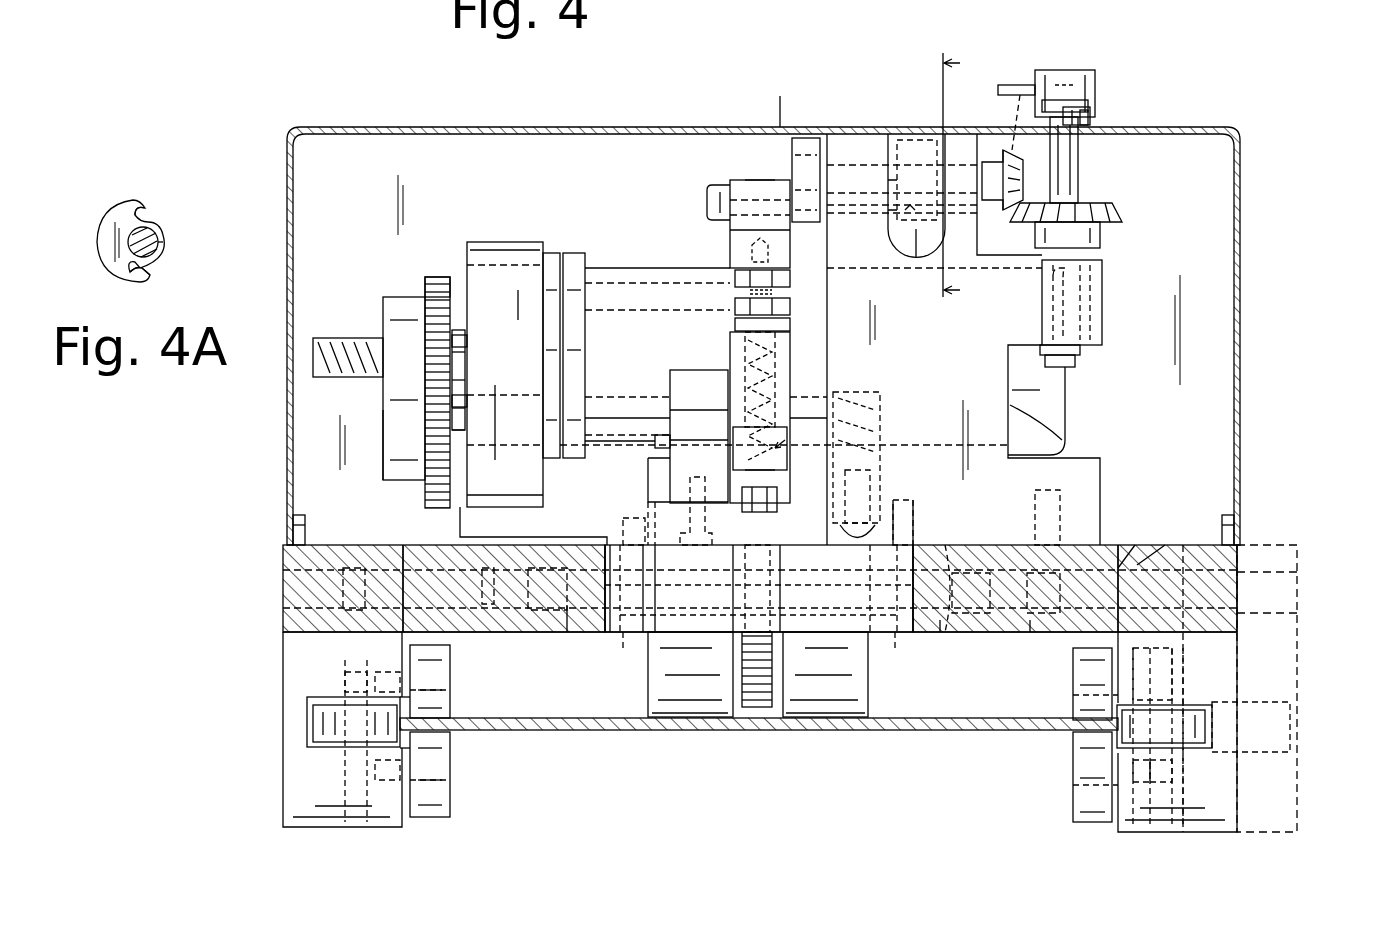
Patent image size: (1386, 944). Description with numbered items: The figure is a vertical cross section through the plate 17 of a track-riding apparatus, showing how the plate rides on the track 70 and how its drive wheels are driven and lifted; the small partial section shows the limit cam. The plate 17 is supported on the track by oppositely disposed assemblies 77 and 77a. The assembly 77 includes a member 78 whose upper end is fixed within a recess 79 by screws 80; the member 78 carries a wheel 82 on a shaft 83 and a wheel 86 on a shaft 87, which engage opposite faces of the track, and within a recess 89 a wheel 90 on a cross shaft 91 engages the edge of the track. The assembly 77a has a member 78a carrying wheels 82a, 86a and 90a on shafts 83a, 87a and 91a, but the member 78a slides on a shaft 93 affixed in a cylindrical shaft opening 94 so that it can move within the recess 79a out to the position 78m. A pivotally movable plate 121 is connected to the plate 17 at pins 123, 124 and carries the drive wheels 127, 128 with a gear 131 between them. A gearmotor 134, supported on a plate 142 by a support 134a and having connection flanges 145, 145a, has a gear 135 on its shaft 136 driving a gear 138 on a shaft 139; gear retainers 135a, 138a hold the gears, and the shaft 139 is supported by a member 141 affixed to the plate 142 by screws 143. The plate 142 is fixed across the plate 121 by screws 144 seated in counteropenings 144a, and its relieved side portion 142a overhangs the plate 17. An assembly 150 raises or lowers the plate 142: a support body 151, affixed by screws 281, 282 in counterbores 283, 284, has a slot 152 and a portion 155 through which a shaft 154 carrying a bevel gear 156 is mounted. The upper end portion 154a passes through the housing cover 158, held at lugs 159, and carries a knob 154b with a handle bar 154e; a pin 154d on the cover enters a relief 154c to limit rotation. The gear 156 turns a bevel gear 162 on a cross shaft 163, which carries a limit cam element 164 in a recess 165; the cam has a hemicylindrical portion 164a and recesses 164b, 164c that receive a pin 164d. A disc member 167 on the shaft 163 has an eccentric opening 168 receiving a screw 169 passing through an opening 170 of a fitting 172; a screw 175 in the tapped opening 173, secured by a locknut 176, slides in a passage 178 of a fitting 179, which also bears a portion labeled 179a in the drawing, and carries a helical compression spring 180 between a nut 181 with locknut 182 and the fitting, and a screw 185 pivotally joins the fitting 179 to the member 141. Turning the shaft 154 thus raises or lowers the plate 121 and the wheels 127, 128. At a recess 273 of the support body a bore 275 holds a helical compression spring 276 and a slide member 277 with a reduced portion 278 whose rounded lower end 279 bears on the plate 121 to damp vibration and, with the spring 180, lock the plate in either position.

In FIG. 4, the plate 17 is at (283, 549).
In FIG. 4, the curved track 70 is at (532, 718).
In FIG. 4, the assembly 77 is at (262, 726).
In FIG. 4, the assembly 77a is at (1323, 699).
In FIG. 4, the member 78 is at (283, 655).
In FIG. 4, the member 78a is at (1237, 668).
In FIG. 4, the outward position of member 78a 78m is at (1297, 608).
In FIG. 4, the recess 79 is at (400, 548).
In FIG. 4, the recess 79a is at (1125, 548).
In FIG. 4, the screw 80 is at (283, 620).
In FIG. 4, the wheel 82 is at (450, 660).
In FIG. 4, the wheel 82a is at (1073, 672).
In FIG. 4, the shaft 83 is at (452, 694).
In FIG. 4, the shaft 83a is at (1080, 700).
In FIG. 4, the wheel 86 is at (450, 748).
In FIG. 4, the wheel 86a is at (1073, 750).
In FIG. 4, the shaft 87 is at (452, 792).
In FIG. 4, the shaft 87a is at (1080, 792).
In FIG. 4, the recess 89 is at (307, 705).
In FIG. 4, the wheel 90 is at (313, 735).
In FIG. 4, the wheel 90a is at (1212, 735).
In FIG. 4, the cross shaft 91 is at (345, 682).
In FIG. 4, the shaft 91a is at (1180, 692).
In FIG. 4, the shaft 93 is at (1165, 545).
In FIG. 4, the cylindrical shaft opening 94 is at (1140, 540).
In FIG. 4, the pivotally movable plate 121 is at (845, 635).
In FIG. 4, the pin 123 is at (567, 620).
In FIG. 4, the pin 124 is at (940, 640).
In FIG. 4, the drive wheel 127 is at (648, 688).
In FIG. 4, the drive wheel 128 is at (868, 686).
In FIG. 4, the gear 131 is at (755, 710).
In FIG. 4, the gearmotor 134 is at (628, 268).
In FIG. 4, the support 134a is at (510, 242).
In FIG. 4, the gear 135 is at (435, 277).
In FIG. 4, the gear retainer 135a is at (398, 297).
In FIG. 4, the shaft 136 is at (460, 330).
In FIG. 4, the gear 138 is at (425, 503).
In FIG. 4, the gear retainer 138a is at (383, 472).
In FIG. 4, the shaft 139 is at (465, 435).
In FIG. 4, the member 141 is at (700, 350).
In FIG. 4, the plate 142 is at (632, 500).
In FIG. 4, the downwardly relieved side portion 142a is at (460, 537).
In FIG. 4, the screw 143 is at (690, 490).
In FIG. 4, the screw 144 is at (623, 525).
In FIG. 4, the counteropening 144a is at (620, 635).
In FIG. 4, the intermediate connection flange 145 is at (552, 253).
In FIG. 4, the intermediate connection flange 145a is at (572, 253).
In FIG. 4, the assembly 150 is at (1133, 257).
In FIG. 4, the support body 151 is at (968, 340).
In FIG. 4, the recess or slot 152 is at (1075, 458).
In FIG. 4, the rotatable shaft 154 is at (1078, 162).
In FIG. 4, the upper end portion 154a is at (1088, 105).
In FIG. 4, the knob 154b is at (1085, 70).
In FIG. 4, the relief 154c is at (1090, 113).
In FIG. 4, the pin 154d is at (1088, 120).
In FIG. 4, the handle bar 154e is at (1040, 70).
In FIG. 4, the portion 155 is at (1102, 312).
In FIG. 4, the bevel gear 156 is at (1122, 210).
In FIG. 4, the housing cover 158 is at (595, 127).
In FIG. 4, the lug 159 is at (293, 520).
In FIG. 4, the bevel gear 162 is at (1018, 85).
In FIG. 4, the cross shaft 163 is at (963, 115).
In FIG. 4A, the cross shaft 163 is at (132, 232).
In FIG. 4, the limit cam element 164 is at (912, 134).
In FIG. 4A, the limit cam element 164 is at (97, 246).
In FIG. 4, the hemicylindrical portion 164a is at (917, 180).
In FIG. 4A, the hemicylindrical portion 164a is at (163, 245).
In FIG. 4A, the recess 164b is at (145, 280).
In FIG. 4, the recess 164c is at (897, 140).
In FIG. 4A, the recess 164c is at (145, 212).
In FIG. 4, the pin 164d is at (912, 212).
In FIG. 4A, the pin 164d is at (150, 268).
In FIG. 4, the recess 165 is at (920, 257).
In FIG. 4, the member 167 is at (785, 100).
In FIG. 4, the eccentric tapped connection opening 168 is at (806, 222).
In FIG. 4, the screw 169 is at (718, 185).
In FIG. 4, the cylindrical opening 170 is at (760, 185).
In FIG. 4, the fitting 172 is at (730, 240).
In FIG. 4, the tapped opening 173 is at (752, 254).
In FIG. 4, the screw 175 is at (778, 495).
In FIG. 4, the locknut 176 is at (735, 280).
In FIG. 4, the passage 178 is at (775, 360).
In FIG. 4, the fitting 179 is at (790, 385).
In FIG. 4, the column portion 179a is at (807, 436).
In FIG. 4, the helical compression spring 180 is at (745, 380).
In FIG. 4, the nut 181 is at (735, 323).
In FIG. 4, the locknut 182 is at (735, 305).
In FIG. 4, the screw 185 is at (655, 445).
In FIG. 4, the recess 273 is at (913, 520).
In FIG. 4, the cylindrical bore opening 275 is at (880, 440).
In FIG. 4, the helical compression spring 276 is at (880, 420).
In FIG. 4, the slide member 277 is at (840, 535).
In FIG. 4, the reduced portion 278 is at (780, 470).
In FIG. 4, the lower end 279 is at (759, 584).
In FIG. 4, the screw 281 is at (925, 510).
In FIG. 4, the screw 282 is at (1055, 490).
In FIG. 4, the counterbore 283 is at (935, 632).
In FIG. 4, the counterbore 284 is at (1030, 634).